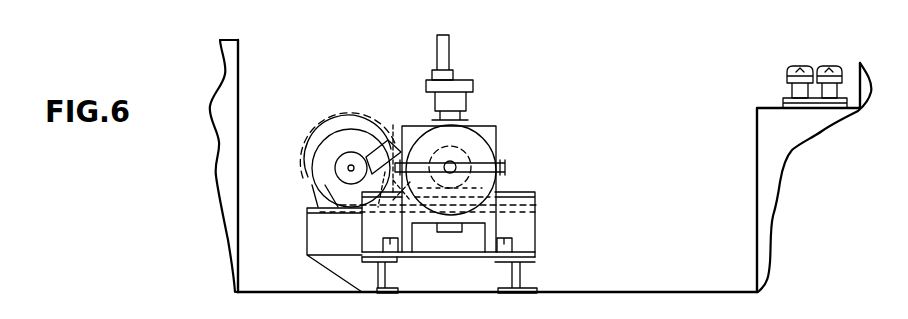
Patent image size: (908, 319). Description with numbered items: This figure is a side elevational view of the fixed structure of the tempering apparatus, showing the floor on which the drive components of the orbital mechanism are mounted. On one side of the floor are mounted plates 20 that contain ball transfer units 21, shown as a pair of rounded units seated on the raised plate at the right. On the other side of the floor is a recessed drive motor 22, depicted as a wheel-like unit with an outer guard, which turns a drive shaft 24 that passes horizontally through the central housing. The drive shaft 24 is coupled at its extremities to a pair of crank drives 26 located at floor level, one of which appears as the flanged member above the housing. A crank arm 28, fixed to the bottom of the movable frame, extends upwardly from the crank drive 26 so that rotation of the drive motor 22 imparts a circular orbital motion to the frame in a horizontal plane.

The plates 20 is at (783, 100).
The ball transfer units 21 is at (830, 67).
The drive motor 22 is at (315, 163).
The drive shaft 24 is at (456, 165).
The crank drives 26 is at (474, 85).
The crank arm 28 is at (450, 47).